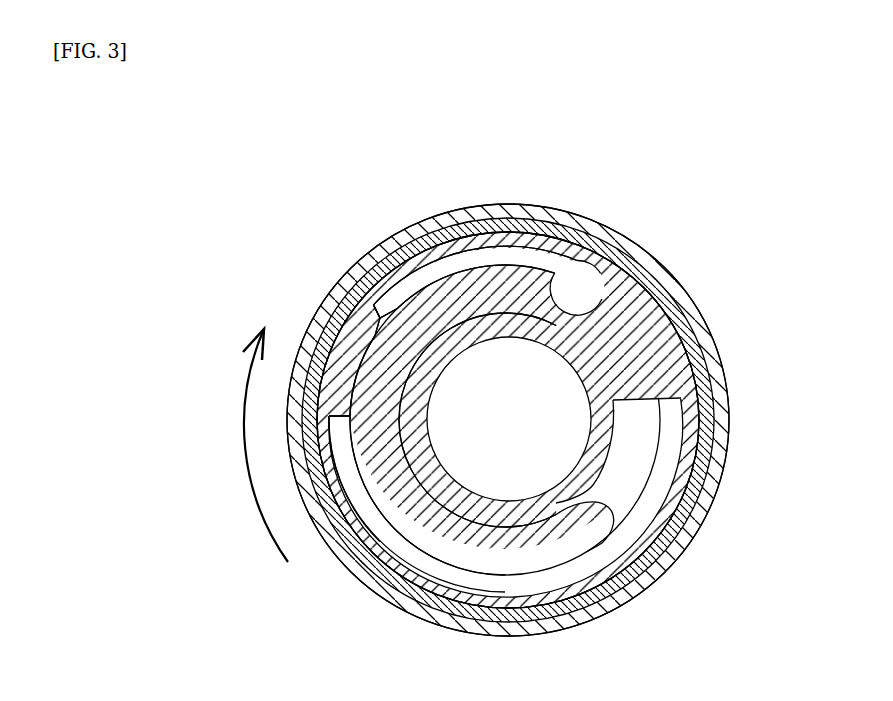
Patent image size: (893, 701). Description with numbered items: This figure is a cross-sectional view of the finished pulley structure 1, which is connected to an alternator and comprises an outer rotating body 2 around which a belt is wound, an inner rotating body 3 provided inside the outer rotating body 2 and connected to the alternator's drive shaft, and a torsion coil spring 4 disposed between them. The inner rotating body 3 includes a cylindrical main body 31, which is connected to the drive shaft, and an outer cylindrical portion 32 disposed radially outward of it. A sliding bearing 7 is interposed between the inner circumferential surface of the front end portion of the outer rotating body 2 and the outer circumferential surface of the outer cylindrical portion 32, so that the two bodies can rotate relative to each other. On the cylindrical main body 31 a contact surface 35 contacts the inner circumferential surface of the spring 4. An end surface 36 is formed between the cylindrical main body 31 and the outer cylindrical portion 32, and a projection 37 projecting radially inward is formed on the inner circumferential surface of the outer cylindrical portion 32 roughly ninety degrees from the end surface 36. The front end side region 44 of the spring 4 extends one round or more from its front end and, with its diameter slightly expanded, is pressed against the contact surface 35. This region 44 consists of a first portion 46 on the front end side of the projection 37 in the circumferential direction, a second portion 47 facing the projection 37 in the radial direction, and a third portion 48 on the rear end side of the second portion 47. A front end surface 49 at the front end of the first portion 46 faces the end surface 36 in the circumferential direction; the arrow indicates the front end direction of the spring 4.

The pulley structure 1 is at (703, 147).
The outer rotating body 2 is at (487, 214).
The inner rotating body 3 is at (662, 291).
The torsion coil spring 4 is at (598, 557).
The sliding bearing 7 is at (462, 228).
The cylindrical main body 31 is at (477, 488).
The outer cylindrical portion 32 is at (418, 248).
The contact surface 35 is at (485, 316).
The end surface 36 is at (597, 262).
The projection 37 is at (376, 316).
The front end side region 44 is at (484, 596).
The first portion 46 is at (385, 293).
The second portion 47 is at (362, 348).
The third portion 48 is at (352, 562).
The front end surface 49 is at (530, 312).